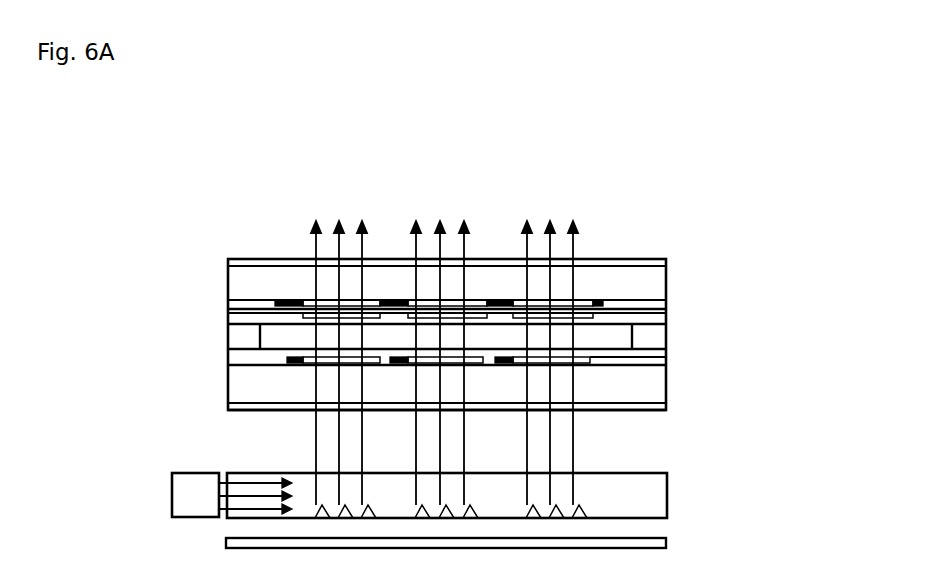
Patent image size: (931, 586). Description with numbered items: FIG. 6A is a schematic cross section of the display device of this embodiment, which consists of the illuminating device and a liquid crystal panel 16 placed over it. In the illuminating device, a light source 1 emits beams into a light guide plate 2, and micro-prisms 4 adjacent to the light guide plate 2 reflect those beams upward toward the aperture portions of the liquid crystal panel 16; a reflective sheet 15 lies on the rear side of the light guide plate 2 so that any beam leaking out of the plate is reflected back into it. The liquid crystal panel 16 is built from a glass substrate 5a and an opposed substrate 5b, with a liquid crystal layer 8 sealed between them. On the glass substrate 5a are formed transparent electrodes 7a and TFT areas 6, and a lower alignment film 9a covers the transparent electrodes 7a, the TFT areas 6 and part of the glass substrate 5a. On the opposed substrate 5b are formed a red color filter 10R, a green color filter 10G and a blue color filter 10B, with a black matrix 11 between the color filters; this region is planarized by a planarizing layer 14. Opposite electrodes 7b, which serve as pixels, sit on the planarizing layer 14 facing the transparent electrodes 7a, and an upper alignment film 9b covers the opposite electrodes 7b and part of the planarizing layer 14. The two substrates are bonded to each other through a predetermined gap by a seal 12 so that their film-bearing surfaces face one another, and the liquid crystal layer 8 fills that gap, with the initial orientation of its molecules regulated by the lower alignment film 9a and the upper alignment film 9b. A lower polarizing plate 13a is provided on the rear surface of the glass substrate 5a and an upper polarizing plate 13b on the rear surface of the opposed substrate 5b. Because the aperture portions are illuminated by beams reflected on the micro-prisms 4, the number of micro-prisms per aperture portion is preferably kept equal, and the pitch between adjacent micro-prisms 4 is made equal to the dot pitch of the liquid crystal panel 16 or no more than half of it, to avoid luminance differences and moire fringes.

The light source 1 is at (187, 490).
The light guide plate 2 is at (655, 498).
The micro-prisms 4 is at (587, 510).
The glass substrate 5a is at (655, 385).
The opposed substrate 5b is at (650, 282).
The TFT areas 6 is at (287, 363).
The transparent electrodes 7a is at (320, 363).
The opposite electrodes 7b is at (303, 323).
The liquid crystal layer 8 is at (613, 339).
The lower alignment film 9a is at (658, 355).
The upper alignment film 9b is at (657, 320).
The red color filter 10R is at (343, 300).
The green color filter 10G is at (457, 300).
The blue color filter 10B is at (557, 300).
The black matrix 11 is at (495, 300).
The seal 12 is at (237, 342).
The lower polarizing plate 13a is at (228, 397).
The upper polarizing plate 13b is at (228, 262).
The planarizing layer 14 is at (657, 307).
The reflective sheet 15 is at (660, 542).
The liquid crystal panel 16 is at (625, 252).